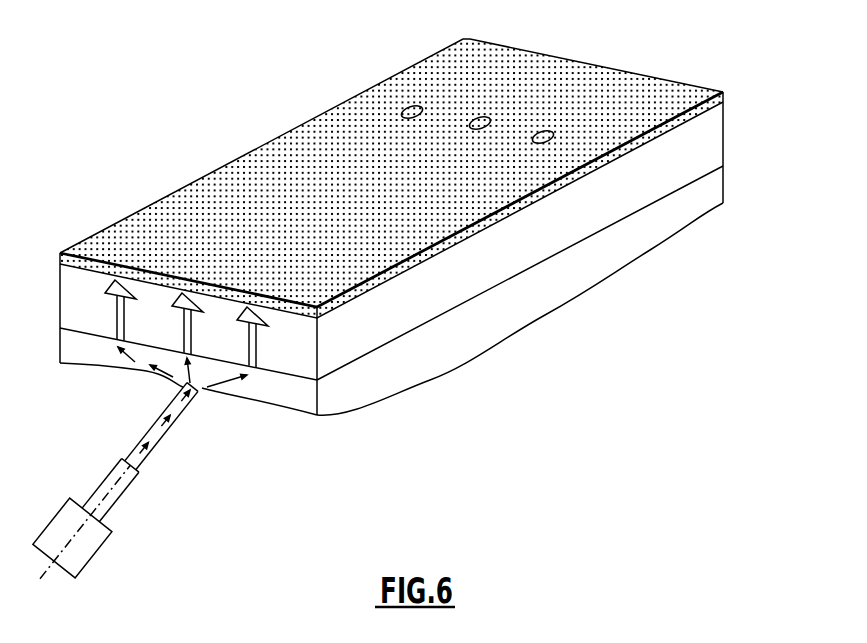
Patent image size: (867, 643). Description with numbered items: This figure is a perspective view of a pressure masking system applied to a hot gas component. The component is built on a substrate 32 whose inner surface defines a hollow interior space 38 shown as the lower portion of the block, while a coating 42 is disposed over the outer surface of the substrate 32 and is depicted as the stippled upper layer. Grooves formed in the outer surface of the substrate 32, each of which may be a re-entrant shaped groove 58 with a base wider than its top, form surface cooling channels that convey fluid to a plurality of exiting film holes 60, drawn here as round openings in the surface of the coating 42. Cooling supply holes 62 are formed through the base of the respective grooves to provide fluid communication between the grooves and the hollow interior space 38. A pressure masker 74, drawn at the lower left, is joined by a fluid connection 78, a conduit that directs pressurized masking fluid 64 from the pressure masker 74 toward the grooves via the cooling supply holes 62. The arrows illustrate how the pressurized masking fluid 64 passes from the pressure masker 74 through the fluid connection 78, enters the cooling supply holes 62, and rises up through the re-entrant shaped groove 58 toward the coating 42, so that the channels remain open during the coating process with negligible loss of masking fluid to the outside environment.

The substrate 32 is at (703, 145).
The hollow interior space 38 is at (683, 203).
The coating 42 is at (554, 68).
The re-entrant shaped groove 58 is at (104, 302).
The exiting film holes 60 is at (540, 133).
The cooling supply holes 62 is at (257, 350).
The pressurized masking fluid 64 is at (142, 462).
The pressure masker 74 is at (95, 553).
The fluid connection 78 is at (147, 432).